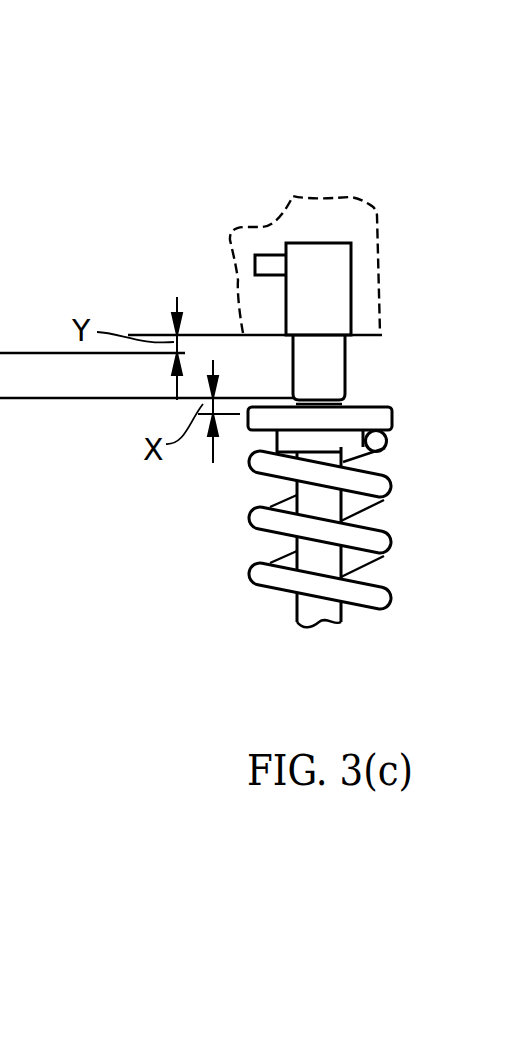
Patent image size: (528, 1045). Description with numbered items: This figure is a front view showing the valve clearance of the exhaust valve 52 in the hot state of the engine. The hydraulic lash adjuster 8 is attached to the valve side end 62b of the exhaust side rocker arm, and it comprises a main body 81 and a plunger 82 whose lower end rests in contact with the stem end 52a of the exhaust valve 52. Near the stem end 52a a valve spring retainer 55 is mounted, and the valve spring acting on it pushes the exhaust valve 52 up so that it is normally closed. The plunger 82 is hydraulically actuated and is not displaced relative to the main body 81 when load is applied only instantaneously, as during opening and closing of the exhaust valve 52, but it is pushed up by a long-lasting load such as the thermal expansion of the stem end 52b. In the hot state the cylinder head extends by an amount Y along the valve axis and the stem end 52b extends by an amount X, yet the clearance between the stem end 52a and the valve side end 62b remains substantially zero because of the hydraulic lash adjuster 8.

The hydraulic lash adjuster 8 is at (309, 152).
The valve side end 62b is at (332, 213).
The main body 81 is at (338, 293).
The plunger 82 is at (330, 372).
The exhaust valve 52 is at (371, 555).
The stem end 52a is at (345, 402).
The stem end 52b is at (332, 572).
The valve spring retainer 55 is at (382, 418).